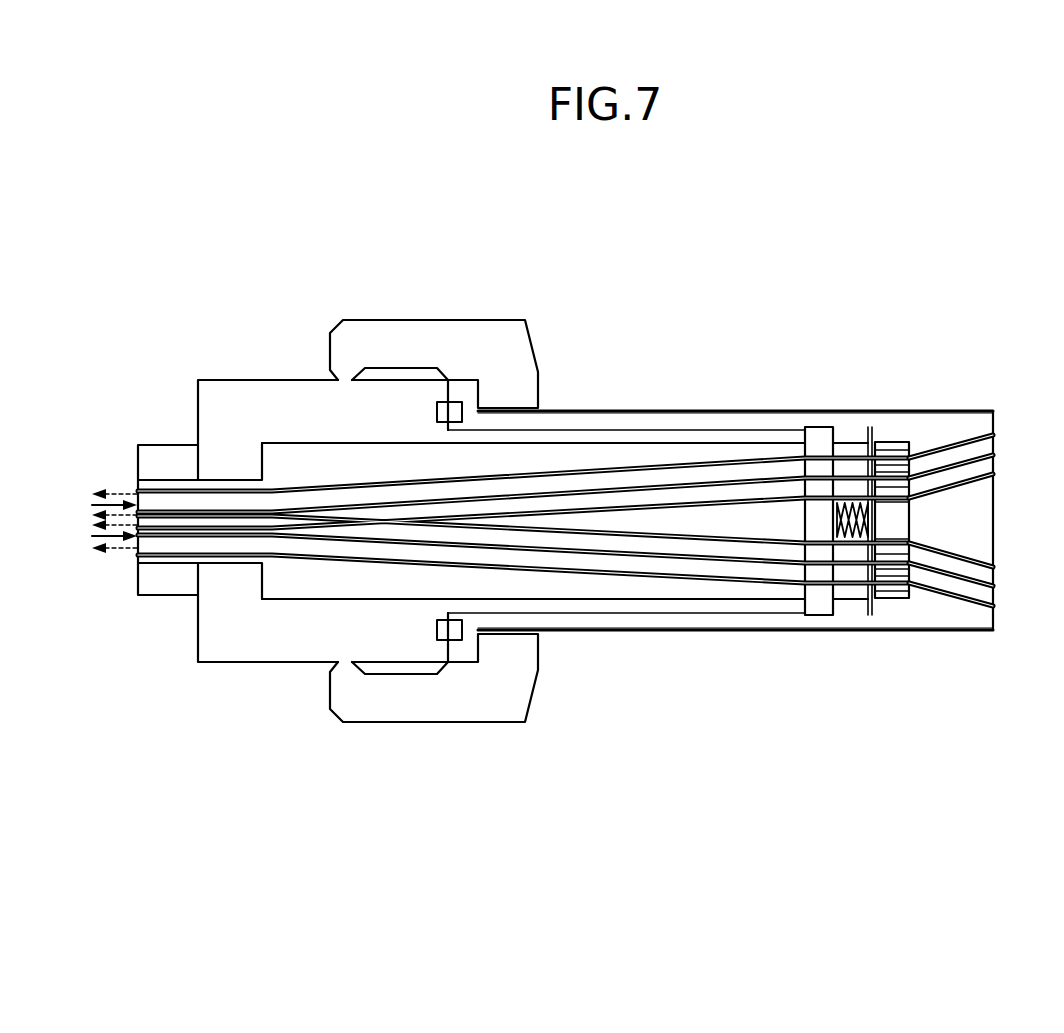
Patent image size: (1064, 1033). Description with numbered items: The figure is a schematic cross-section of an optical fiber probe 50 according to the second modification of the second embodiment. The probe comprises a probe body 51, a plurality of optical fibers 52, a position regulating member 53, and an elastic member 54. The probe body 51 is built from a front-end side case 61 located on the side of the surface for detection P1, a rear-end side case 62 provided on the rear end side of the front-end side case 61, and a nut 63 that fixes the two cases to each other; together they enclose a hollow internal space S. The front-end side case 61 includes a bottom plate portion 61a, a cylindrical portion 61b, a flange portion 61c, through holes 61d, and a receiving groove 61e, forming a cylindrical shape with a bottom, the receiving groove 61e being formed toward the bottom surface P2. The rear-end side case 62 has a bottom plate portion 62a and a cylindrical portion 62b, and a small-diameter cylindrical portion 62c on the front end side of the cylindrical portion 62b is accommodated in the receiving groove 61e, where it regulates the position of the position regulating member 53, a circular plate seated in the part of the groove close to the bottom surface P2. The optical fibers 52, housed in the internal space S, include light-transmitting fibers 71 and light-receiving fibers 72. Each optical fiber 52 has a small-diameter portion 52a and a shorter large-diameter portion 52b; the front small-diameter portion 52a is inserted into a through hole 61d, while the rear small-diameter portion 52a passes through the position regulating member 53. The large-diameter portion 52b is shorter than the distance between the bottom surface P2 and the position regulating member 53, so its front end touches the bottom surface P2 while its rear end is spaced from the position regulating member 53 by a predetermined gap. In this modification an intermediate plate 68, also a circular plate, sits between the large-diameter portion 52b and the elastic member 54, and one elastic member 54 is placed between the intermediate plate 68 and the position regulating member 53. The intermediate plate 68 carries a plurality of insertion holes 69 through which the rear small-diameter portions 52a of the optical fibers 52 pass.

The optical fiber probe 50 is at (687, 296).
The probe body 51 is at (724, 406).
The optical fibers 52 is at (558, 582).
The small-diameter portion 52a is at (936, 445).
The large-diameter portion 52b is at (886, 600).
The position regulating member 53 is at (820, 603).
The elastic member 54 is at (848, 540).
The front-end side case 61 is at (668, 409).
The bottom plate portion 61a is at (973, 497).
The cylindrical portion 61b is at (758, 425).
The flange portion 61c is at (460, 400).
The through holes 61d is at (968, 457).
The receiving groove 61e is at (810, 612).
The rear-end side case 62 is at (280, 378).
The bottom plate portion 62a is at (222, 585).
The cylindrical portion 62b is at (298, 640).
The small-diameter cylindrical portion 62c is at (668, 612).
The nut 63 is at (392, 320).
The intermediate plate 68 is at (870, 616).
The insertion holes 69 is at (876, 441).
The light-transmitting fibers 71 is at (155, 518).
The light-receiving fibers 72 is at (214, 514).
The surface for detection P1 is at (993, 513).
The bottom surface P2 is at (899, 519).
The internal space S is at (324, 474).